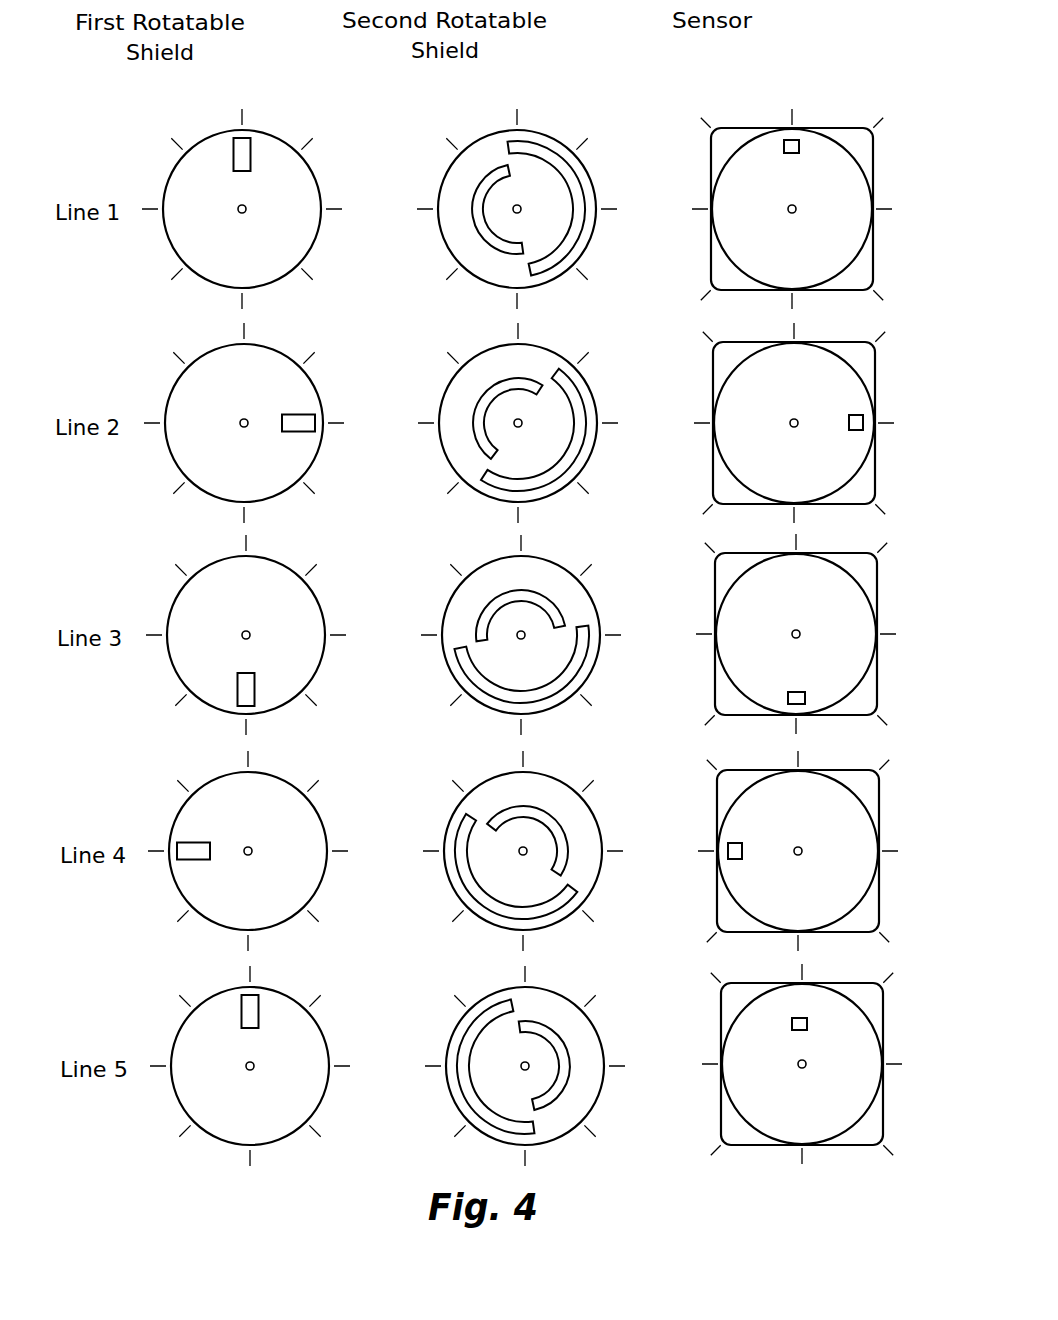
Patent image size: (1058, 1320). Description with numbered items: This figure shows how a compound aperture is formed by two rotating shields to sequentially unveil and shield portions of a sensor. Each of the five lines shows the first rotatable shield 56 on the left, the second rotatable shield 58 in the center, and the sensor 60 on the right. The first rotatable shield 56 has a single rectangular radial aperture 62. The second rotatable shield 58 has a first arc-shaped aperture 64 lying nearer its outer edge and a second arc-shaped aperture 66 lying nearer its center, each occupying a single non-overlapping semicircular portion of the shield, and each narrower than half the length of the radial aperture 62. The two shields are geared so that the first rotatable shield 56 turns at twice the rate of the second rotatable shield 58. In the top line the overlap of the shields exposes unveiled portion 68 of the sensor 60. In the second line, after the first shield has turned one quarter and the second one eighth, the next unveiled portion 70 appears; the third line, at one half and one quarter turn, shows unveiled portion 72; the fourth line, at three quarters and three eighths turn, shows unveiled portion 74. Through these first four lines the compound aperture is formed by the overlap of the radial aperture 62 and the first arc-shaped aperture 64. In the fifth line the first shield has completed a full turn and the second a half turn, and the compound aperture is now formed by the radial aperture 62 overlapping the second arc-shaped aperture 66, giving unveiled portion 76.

The first rotatable shield 56 is at (207, 140).
The second rotatable shield 58 is at (486, 134).
The sensor 60 is at (753, 128).
The radial aperture 62 is at (250, 148).
The first arc-shaped aperture 64 is at (543, 147).
The second arc-shaped aperture 66 is at (470, 200).
The unveiled portion 68 is at (800, 147).
The unveiled portion 70 is at (863, 422).
The unveiled portion 72 is at (805, 697).
The unveiled portion 74 is at (728, 848).
The unveiled portion 76 is at (807, 1024).